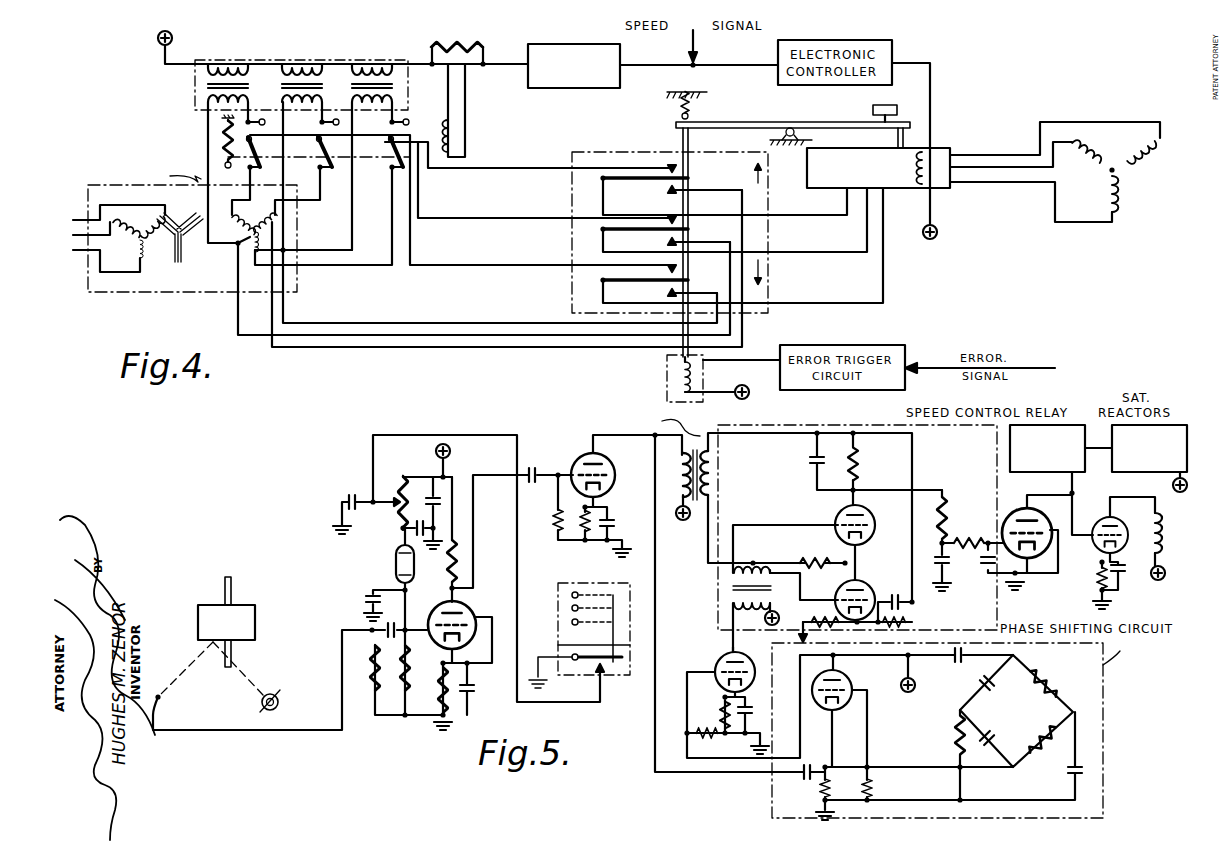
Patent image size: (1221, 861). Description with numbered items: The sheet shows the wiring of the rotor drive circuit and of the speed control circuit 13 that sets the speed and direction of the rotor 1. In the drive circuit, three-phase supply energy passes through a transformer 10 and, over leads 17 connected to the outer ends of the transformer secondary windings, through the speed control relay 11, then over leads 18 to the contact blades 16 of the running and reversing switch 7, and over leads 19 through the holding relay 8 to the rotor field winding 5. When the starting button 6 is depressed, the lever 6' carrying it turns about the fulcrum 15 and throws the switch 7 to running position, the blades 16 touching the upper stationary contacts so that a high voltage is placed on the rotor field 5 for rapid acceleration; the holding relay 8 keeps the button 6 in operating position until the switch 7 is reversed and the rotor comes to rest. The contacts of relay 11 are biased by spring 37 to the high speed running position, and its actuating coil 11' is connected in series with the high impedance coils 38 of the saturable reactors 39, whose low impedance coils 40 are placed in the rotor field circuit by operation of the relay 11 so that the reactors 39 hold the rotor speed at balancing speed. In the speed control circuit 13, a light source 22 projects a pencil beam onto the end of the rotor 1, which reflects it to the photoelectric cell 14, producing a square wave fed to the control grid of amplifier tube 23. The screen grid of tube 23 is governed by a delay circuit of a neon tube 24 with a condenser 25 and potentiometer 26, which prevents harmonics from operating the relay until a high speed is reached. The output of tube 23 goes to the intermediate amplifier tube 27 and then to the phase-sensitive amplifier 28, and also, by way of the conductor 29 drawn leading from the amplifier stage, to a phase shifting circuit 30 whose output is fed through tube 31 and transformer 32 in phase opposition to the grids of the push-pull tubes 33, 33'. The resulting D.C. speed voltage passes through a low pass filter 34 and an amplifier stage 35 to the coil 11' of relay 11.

In FIG. 5, the rotor 1 is at (255, 618).
In FIG. 4, the rotor field winding 5 is at (1120, 204).
In FIG. 4, the starting button 6 is at (891, 101).
In FIG. 4, the lever 6' is at (788, 225).
In FIG. 4, the running and reversing switch 7 is at (566, 290).
In FIG. 4, the holding relay 8 is at (902, 190).
In FIG. 4, the transformer 10 is at (122, 291).
In FIG. 4, the speed control relay 11 is at (450, 200).
In FIG. 5, the speed control relay 11 is at (1061, 480).
In FIG. 4, the actuating coil 11' is at (466, 110).
In FIG. 5, the actuating coil 11' is at (1138, 553).
In FIG. 4, the speed control circuit 13 is at (552, 88).
In FIG. 5, the speed control circuit 13 is at (294, 487).
In FIG. 5, the photoelectric cell 14 is at (168, 696).
In FIG. 4, the fulcrum 15 is at (790, 128).
In FIG. 4, the contact blades 16 is at (602, 278).
In FIG. 4, the leads 17 is at (362, 208).
In FIG. 4, the leads 18 is at (475, 222).
In FIG. 4, the leads 19 is at (800, 275).
In FIG. 5, the light source 22 is at (278, 698).
In FIG. 5, the amplifier tube 23 is at (470, 612).
In FIG. 5, the neon tube 24 is at (392, 559).
In FIG. 5, the condenser 25 is at (332, 502).
In FIG. 5, the potentiometer 26 is at (392, 506).
In FIG. 5, the intermediate amplifier tube 27 is at (574, 456).
In FIG. 5, the phase-sensitive amplifier 28 is at (822, 430).
In FIG. 5, the conductor 29 is at (655, 630).
In FIG. 5, the phase shifting circuit 30 is at (772, 790).
In FIG. 5, the tube 31 is at (710, 653).
In FIG. 5, the transformer 32 is at (718, 589).
In FIG. 5, the push-pull connected tube 33 is at (837, 505).
In FIG. 5, the push-pull connected tube 33' is at (842, 603).
In FIG. 5, the low pass filter 34 is at (980, 602).
In FIG. 5, the amplifier stage 35 is at (1060, 510).
In FIG. 4, the spring 37 is at (217, 151).
In FIG. 4, the high impedance coils 38 is at (197, 63).
In FIG. 4, the saturable reactors 39 is at (195, 95).
In FIG. 5, the saturable reactors 39 is at (1125, 466).
In FIG. 4, the low impedance coils 40 is at (222, 118).